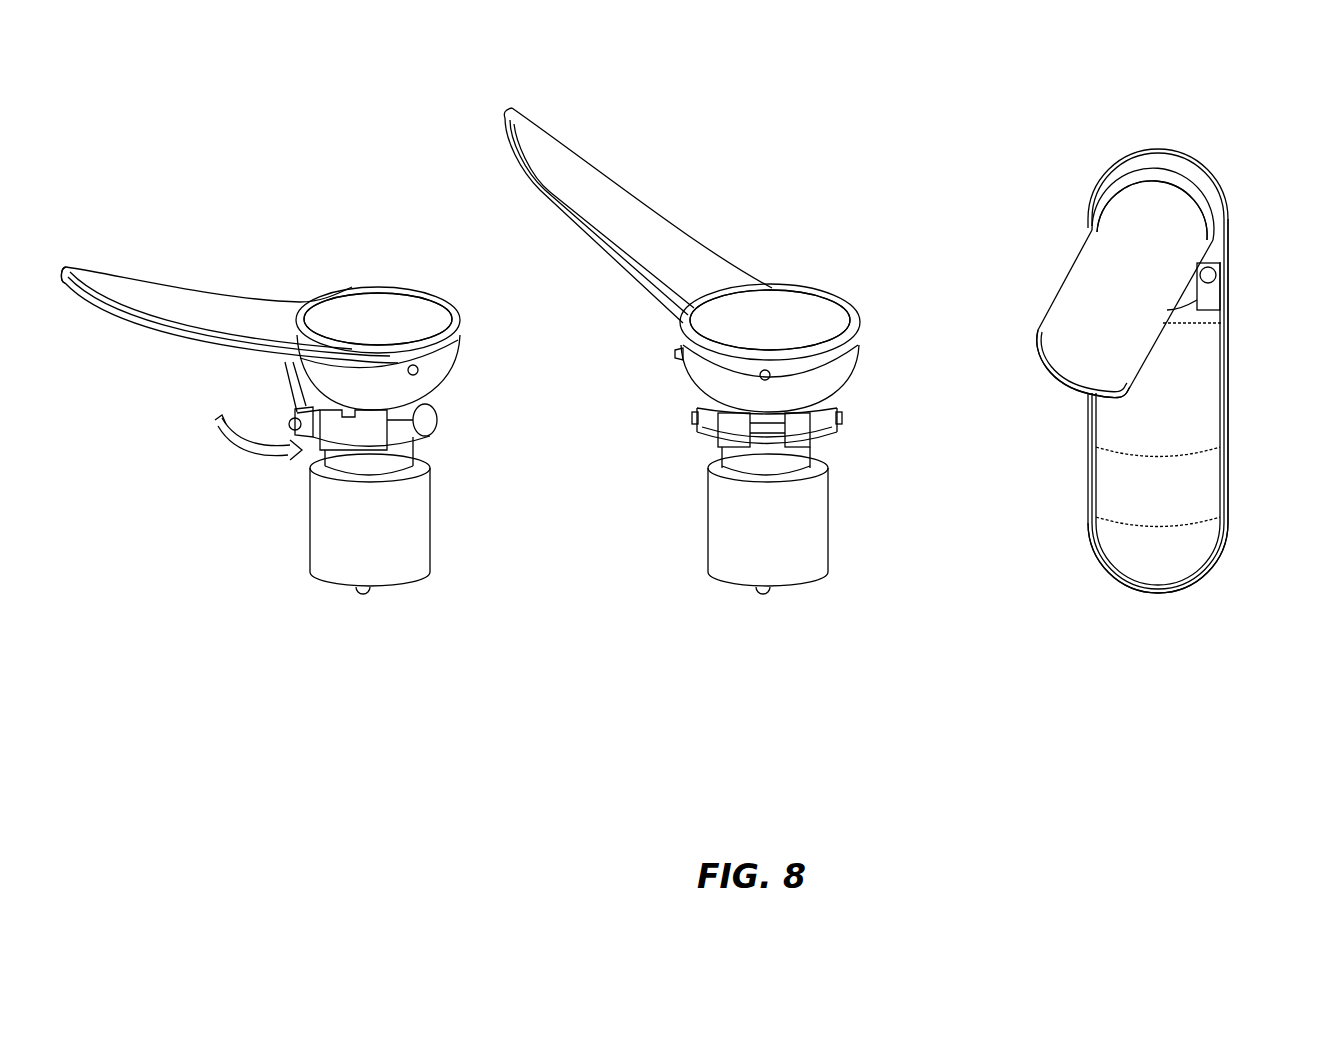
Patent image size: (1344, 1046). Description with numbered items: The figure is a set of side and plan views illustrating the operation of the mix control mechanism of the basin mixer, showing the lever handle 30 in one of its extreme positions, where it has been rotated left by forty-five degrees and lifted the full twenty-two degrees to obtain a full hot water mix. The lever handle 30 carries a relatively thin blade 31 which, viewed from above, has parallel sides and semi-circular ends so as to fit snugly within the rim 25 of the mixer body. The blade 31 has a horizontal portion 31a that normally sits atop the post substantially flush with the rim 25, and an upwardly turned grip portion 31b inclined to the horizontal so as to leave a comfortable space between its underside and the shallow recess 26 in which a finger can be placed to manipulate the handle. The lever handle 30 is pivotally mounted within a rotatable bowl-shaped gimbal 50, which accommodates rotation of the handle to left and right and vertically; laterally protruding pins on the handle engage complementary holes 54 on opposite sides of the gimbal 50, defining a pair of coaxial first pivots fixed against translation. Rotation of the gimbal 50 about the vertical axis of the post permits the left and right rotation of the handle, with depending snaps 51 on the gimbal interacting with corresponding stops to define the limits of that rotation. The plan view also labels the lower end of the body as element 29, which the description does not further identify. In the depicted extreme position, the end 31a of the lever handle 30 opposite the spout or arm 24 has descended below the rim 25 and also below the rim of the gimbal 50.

The arm 24 is at (1231, 487).
The rim 25 is at (1229, 347).
The recess 26 is at (1168, 428).
The tube bottom 29 is at (1159, 595).
The lever handle 30 is at (255, 306).
The blade 31 is at (130, 292).
The horizontal portion 31a is at (420, 320).
The grip portion 31b is at (102, 310).
The gimbal 50 is at (465, 402).
The snaps 51 is at (432, 418).
The holes 54 is at (418, 371).